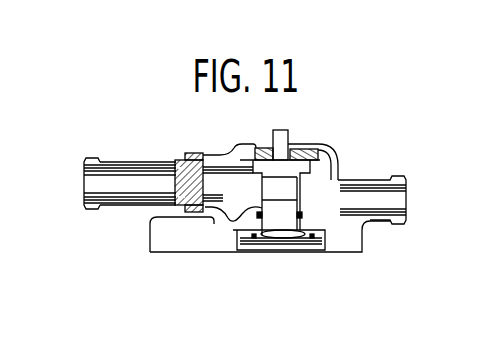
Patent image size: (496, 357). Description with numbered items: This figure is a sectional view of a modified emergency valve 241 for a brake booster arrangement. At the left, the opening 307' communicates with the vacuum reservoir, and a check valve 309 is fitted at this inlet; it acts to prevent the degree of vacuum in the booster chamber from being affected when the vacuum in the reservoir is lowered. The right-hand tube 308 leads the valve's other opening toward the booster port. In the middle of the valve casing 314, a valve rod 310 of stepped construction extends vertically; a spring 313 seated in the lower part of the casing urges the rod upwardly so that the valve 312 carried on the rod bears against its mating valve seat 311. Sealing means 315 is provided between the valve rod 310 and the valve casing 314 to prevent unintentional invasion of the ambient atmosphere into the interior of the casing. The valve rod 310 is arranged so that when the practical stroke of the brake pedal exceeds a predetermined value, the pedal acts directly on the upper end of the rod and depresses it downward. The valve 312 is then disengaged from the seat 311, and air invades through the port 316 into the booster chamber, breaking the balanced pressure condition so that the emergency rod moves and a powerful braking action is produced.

The valve body 241 is at (408, 161).
The opening 307' is at (130, 199).
The outlet tube 308 is at (402, 202).
The check valve 309 is at (180, 178).
The valve rod 310 is at (280, 140).
The valve seat 311 is at (256, 149).
The valve 312 is at (262, 163).
The spring 313 is at (260, 240).
The valve casing 314 is at (338, 233).
The sealing means 315 is at (302, 213).
The port 316 is at (308, 149).